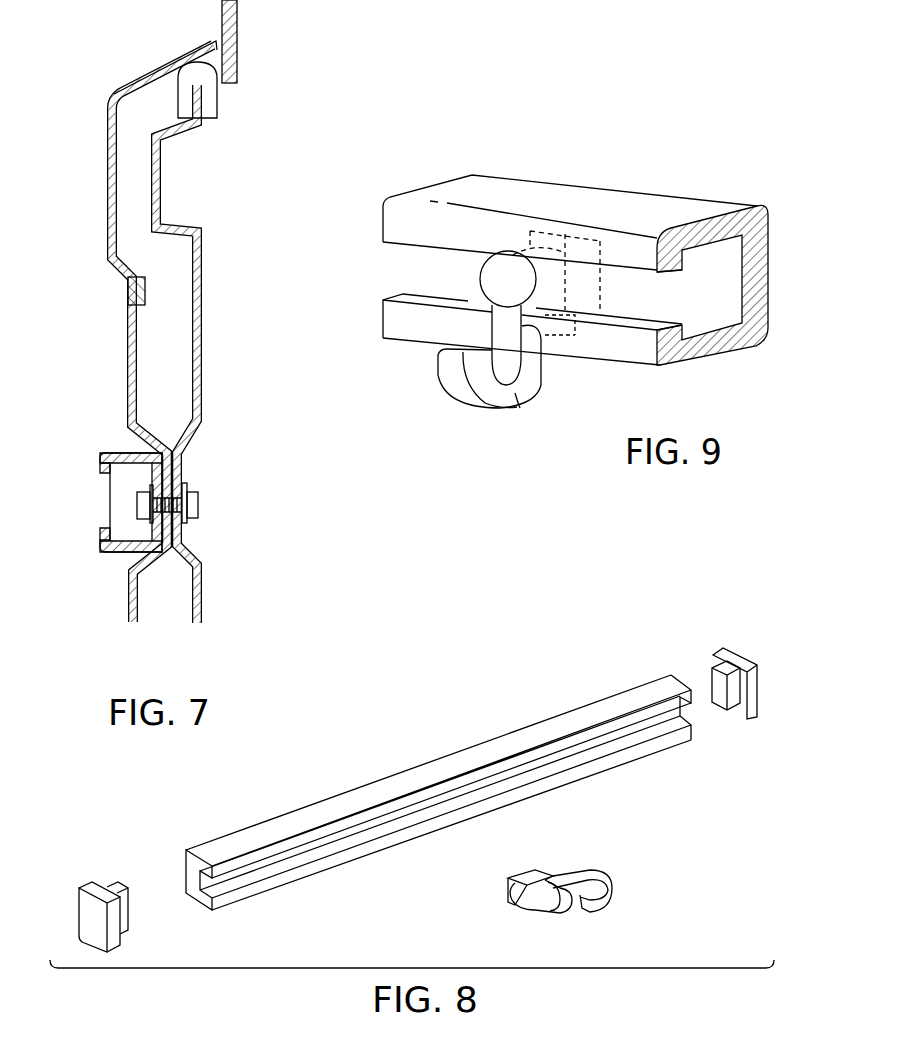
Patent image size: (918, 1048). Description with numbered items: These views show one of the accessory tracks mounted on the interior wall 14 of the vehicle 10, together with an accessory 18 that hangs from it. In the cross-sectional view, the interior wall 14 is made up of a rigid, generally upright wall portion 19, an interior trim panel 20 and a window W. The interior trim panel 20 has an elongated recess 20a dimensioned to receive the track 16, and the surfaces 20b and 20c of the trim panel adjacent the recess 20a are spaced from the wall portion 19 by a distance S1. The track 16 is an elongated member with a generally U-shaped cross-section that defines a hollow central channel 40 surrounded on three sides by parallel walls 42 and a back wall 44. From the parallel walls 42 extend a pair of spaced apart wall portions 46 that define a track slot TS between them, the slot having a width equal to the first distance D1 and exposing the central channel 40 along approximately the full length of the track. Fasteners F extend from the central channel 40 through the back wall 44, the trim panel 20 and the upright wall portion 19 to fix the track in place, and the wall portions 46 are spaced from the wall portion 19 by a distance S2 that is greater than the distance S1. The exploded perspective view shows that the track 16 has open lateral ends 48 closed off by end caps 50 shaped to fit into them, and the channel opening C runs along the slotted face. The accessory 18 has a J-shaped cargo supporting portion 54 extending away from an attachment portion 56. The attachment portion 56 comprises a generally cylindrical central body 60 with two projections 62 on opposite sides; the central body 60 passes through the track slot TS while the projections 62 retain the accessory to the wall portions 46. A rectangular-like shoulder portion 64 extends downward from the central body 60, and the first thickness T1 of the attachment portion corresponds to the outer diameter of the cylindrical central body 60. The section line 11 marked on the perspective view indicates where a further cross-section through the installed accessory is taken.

In FIG. 8, the vehicle 10 is at (547, 708).
In FIG. 9, the section line 11- 11 is at (568, 168).
In FIG. 7, the interior wall 14 is at (146, 46).
In FIG. 7, the track 16 is at (105, 456).
In FIG. 8, the track 16 is at (359, 756).
In FIG. 9, the track 16 is at (603, 194).
In FIG. 8, the accessory 18 is at (572, 852).
In FIG. 9, the accessory 18 is at (434, 394).
In FIG. 7, the wall portion 19 is at (201, 352).
In FIG. 7, the interior trim panel 20 is at (127, 344).
In FIG. 7, the elongated recess 20a is at (182, 578).
In FIG. 7, the surface 20b is at (127, 394).
In FIG. 7, the surface 20c is at (128, 600).
In FIG. 7, the central channel 40 is at (134, 543).
In FIG. 7, the parallel walls 42 is at (134, 458).
In FIG. 9, the parallel walls 42 is at (710, 222).
In FIG. 7, the back wall 44 is at (157, 475).
In FIG. 9, the back wall 44 is at (740, 281).
In FIG. 7, the wall portions 46 is at (104, 470).
In FIG. 8, the wall portions 46 is at (692, 722).
In FIG. 9, the wall portions 46 is at (400, 220).
In FIG. 8, the open lateral ends 48 is at (200, 862).
In FIG. 8, the end caps 50 is at (740, 648).
In FIG. 8, the cargo supporting portion 54 is at (597, 906).
In FIG. 9, the cargo supporting portion 54 is at (518, 400).
In FIG. 8, the attachment portion 56 is at (526, 876).
In FIG. 9, the attachment portion 56 is at (503, 258).
In FIG. 9, the central body 60 is at (570, 282).
In FIG. 9, the projections 62 is at (540, 229).
In FIG. 9, the shoulder portion 64 is at (556, 316).
In FIG. 7, the window W is at (237, 22).
In FIG. 7, the fasteners F is at (198, 506).
In FIG. 8, the channel opening C is at (198, 878).
In FIG. 7, the track slot TS is at (104, 528).
In FIG. 8, the track slot TS is at (244, 893).
In FIG. 9, the track slot TS is at (428, 300).
In FIG. 7, the first distance D1 is at (105, 476).
In FIG. 8, the first distance D1 is at (286, 822).
In FIG. 9, the first distance D1 is at (368, 300).
In FIG. 9, the first thickness T1 is at (482, 280).
In FIG. 7, the distance S1 is at (192, 677).
In FIG. 7, the distance S2 is at (100, 617).